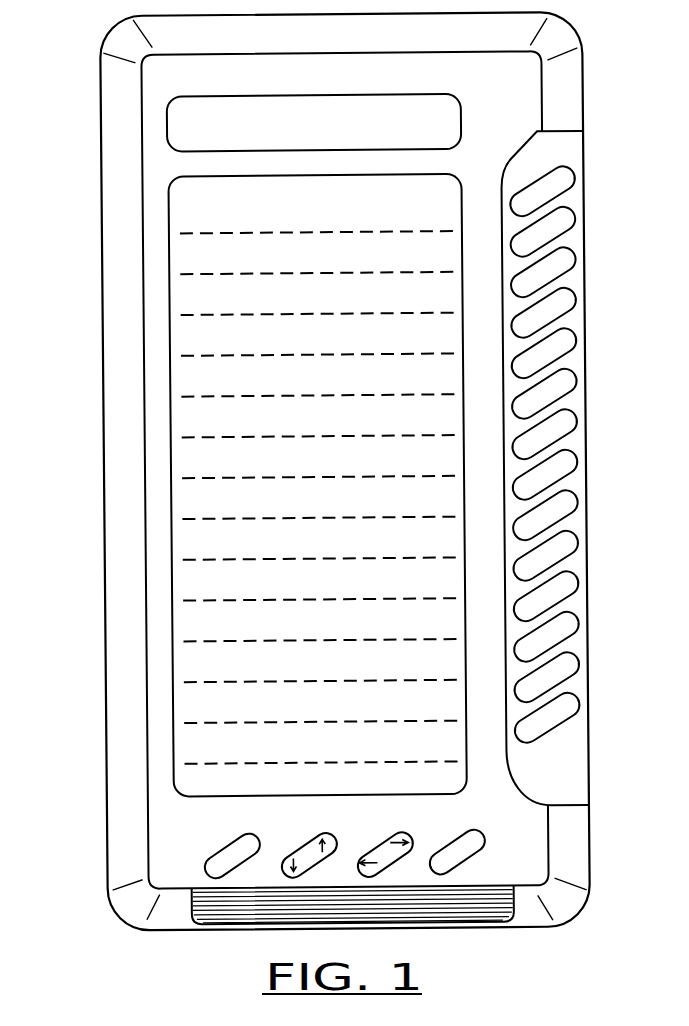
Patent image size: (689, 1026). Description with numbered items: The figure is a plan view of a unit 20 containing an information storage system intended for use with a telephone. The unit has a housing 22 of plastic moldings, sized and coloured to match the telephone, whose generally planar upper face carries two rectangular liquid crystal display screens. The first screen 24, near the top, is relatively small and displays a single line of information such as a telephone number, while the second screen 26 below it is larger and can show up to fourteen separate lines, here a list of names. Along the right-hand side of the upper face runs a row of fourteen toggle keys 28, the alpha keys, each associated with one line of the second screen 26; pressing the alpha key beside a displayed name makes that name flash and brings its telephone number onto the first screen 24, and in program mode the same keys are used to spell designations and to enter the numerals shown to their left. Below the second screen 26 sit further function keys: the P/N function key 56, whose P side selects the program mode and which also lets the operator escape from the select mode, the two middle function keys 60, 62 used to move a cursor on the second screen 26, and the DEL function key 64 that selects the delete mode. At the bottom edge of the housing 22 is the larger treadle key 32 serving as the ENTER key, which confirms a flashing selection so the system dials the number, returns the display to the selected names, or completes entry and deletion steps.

The unit 20 is at (590, 63).
The housing 22 is at (104, 139).
The first screen 24 is at (170, 118).
The second screen 26 is at (171, 255).
The toggle keys 28 is at (577, 296).
The treadle key 32 is at (472, 926).
The P/N function key 56 is at (230, 840).
The function key 60 is at (305, 840).
The function key 62 is at (381, 840).
The DEL function key 64 is at (458, 837).